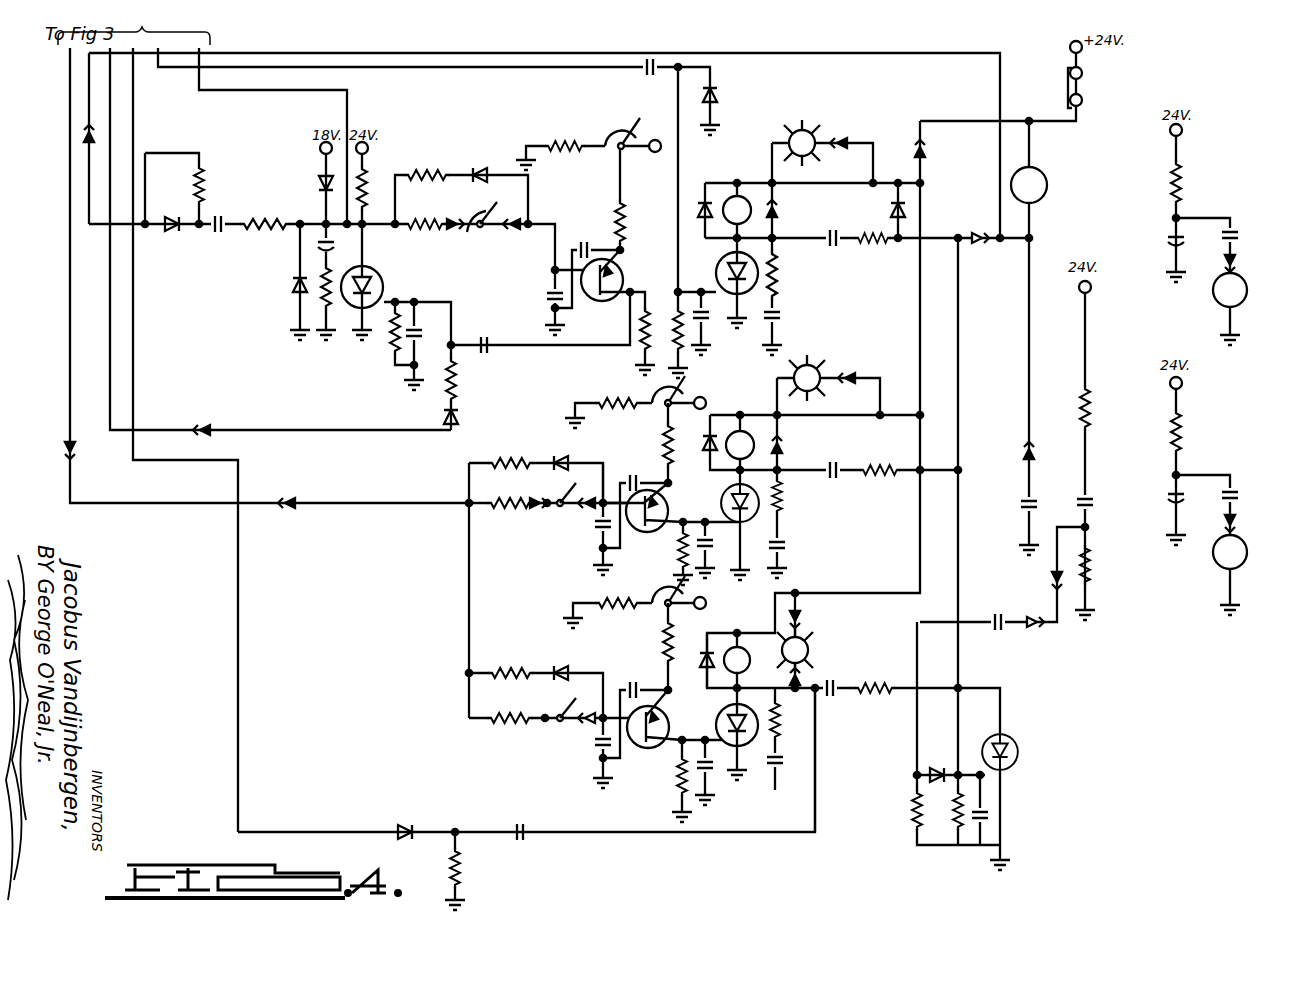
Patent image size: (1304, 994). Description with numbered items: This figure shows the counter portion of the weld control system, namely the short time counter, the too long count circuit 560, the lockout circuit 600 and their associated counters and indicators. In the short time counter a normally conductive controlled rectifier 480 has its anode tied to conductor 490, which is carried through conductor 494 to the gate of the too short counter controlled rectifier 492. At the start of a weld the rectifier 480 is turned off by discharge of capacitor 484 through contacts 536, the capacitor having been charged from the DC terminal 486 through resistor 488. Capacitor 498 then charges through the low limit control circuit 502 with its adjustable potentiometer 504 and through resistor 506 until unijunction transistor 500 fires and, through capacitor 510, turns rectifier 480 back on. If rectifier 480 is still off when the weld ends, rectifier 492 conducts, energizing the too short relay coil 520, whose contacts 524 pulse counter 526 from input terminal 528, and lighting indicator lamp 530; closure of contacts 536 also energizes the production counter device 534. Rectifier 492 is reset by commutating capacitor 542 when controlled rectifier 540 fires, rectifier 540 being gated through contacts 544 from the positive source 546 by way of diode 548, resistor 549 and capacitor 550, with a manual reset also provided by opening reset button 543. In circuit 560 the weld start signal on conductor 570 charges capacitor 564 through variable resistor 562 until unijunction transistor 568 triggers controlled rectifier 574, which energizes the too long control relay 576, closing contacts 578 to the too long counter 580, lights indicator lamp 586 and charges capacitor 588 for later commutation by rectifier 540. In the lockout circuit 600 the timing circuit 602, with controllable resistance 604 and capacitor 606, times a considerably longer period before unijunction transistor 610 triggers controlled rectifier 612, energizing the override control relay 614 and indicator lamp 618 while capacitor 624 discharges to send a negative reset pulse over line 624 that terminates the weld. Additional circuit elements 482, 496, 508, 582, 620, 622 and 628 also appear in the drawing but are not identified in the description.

The controlled rectifier 480 is at (376, 272).
The conductor 482 is at (89, 186).
The capacitor 484 is at (216, 215).
The terminal 486 is at (1083, 50).
The resistor 488 is at (201, 175).
The conductor 490 is at (349, 96).
The too short counter controlled rectifier 492 is at (780, 273).
The conductor 494 is at (548, 62).
The diode 496 is at (176, 236).
The capacitor 498 is at (540, 336).
The unijunction transistor 500 is at (601, 306).
The low limit control circuit 502 is at (479, 158).
The adjustable potentiometer 504 is at (478, 240).
The resistor 506 is at (370, 185).
The voltage terminal 508 is at (368, 153).
The capacitor 510 is at (484, 338).
The low limit indicator relay coil 520 is at (740, 196).
The too short contacts 524 is at (1233, 225).
The counter 526 is at (1213, 291).
The input terminal 528 is at (1170, 131).
The indicator lamp 530 is at (808, 127).
The production counter device 534 is at (1047, 186).
The contacts 536 is at (1020, 500).
The controlled rectifier 540 is at (1011, 745).
The commutating capacitor 542 is at (833, 231).
The reset button 543 is at (1105, 93).
The contacts 544 is at (1093, 495).
The source of positive potential 546 is at (1082, 292).
The diode 548 is at (945, 770).
The resistor 549 is at (917, 835).
The capacitor 550 is at (990, 820).
The too long count circuit 560 is at (676, 504).
The variable resistor 562 is at (536, 479).
The capacitor 564 is at (592, 525).
The unijunction transistor 568 is at (648, 532).
The conductor 570 is at (165, 505).
The controlled rectifier 574 is at (785, 516).
The too long control relay 576 is at (743, 428).
The contacts 578 is at (1238, 490).
The too long counter 580 is at (1214, 556).
The resistor 582 is at (1183, 386).
The indicator lamp 586 is at (811, 362).
The capacitor 588 is at (833, 462).
The lockout circuit 600 is at (718, 734).
The timing circuit 602 is at (549, 755).
The controllable resistance 604 is at (536, 695).
The capacitor 606 is at (600, 748).
The unijunction transistor 610 is at (650, 750).
The controlled rectifier 612 is at (776, 775).
The override control relay 614 is at (746, 622).
The indicator lamp 618 is at (811, 645).
The capacitor 620 is at (832, 698).
The conductor 622 is at (818, 825).
The capacitor 624 is at (238, 635).
The conductor 628 is at (110, 347).